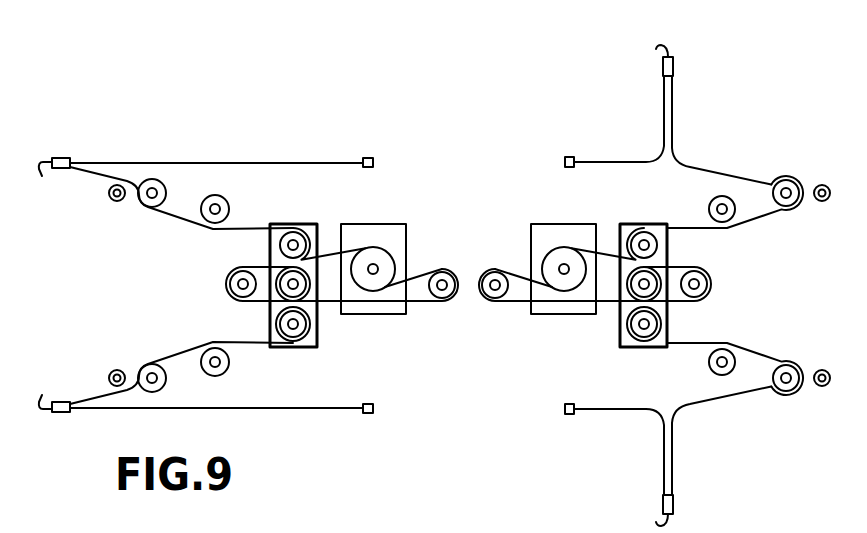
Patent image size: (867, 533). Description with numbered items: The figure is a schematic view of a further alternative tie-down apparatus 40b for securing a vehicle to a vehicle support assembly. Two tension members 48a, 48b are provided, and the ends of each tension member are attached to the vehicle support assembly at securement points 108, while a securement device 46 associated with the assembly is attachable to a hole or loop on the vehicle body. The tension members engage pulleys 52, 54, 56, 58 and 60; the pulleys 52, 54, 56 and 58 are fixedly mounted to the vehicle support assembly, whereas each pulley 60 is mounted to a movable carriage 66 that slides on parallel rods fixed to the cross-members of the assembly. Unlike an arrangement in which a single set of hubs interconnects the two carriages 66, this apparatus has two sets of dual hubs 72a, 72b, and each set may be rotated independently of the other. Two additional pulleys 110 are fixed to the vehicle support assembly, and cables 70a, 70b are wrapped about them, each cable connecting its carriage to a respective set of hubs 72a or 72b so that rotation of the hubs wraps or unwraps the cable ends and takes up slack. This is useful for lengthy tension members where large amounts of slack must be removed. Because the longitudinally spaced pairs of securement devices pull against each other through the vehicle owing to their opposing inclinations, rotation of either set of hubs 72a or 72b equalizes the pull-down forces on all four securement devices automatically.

The tie-down apparatus 40b is at (447, 134).
The securement device 46 is at (674, 66).
The tension member 48a is at (238, 162).
The tension member 48b is at (622, 162).
The pulley 52 is at (822, 184).
The pulley 54 is at (778, 178).
The pulley 56 is at (708, 204).
The pulley 58 is at (712, 292).
The pulley 60 is at (660, 248).
The movable carriage 66 is at (317, 336).
The cable 70a is at (414, 314).
The cable 70b is at (518, 316).
The dual hubs 72a is at (373, 247).
The dual hubs 72b is at (562, 247).
The securement point 108 is at (367, 157).
The pulley 110 is at (442, 270).